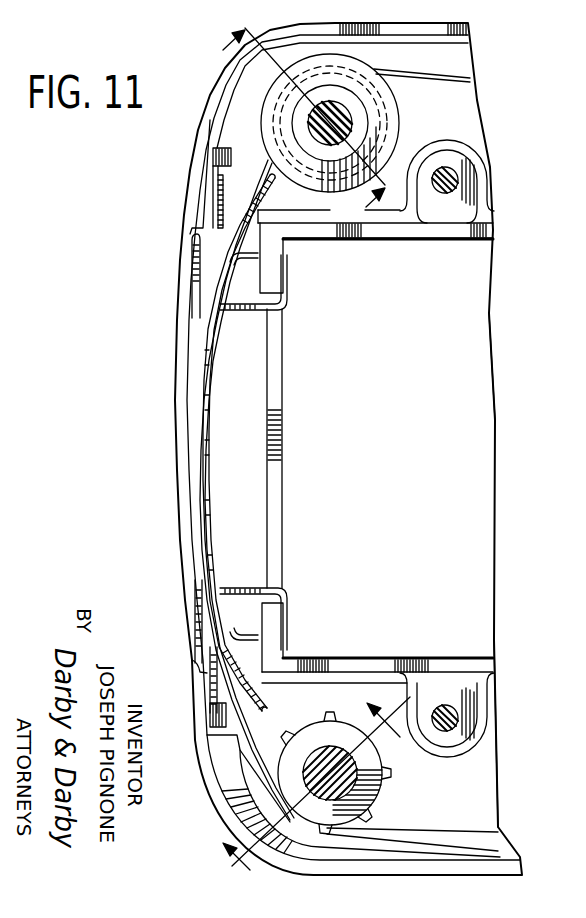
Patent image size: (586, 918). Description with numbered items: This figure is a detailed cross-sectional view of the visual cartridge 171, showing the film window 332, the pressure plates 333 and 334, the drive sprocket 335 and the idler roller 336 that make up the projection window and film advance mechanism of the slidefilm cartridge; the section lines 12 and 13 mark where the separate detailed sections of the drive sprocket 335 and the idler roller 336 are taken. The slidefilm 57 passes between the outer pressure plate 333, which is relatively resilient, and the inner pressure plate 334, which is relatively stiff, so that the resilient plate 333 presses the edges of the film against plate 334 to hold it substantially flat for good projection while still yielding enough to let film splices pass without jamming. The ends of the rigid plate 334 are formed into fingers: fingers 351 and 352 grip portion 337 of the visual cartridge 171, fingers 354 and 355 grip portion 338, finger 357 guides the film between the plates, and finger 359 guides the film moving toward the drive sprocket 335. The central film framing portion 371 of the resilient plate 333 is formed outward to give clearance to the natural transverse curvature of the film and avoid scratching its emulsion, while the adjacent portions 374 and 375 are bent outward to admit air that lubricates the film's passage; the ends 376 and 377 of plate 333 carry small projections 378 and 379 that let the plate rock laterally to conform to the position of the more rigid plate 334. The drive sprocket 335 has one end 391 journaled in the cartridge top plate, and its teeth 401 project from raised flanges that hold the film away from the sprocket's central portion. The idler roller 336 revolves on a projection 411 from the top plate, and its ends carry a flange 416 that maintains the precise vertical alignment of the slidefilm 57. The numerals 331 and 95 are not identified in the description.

The section line 13- 13 is at (284, 124).
The section line 12- 12 is at (317, 791).
The flange 416 is at (380, 73).
The slidefilm 57 is at (455, 73).
The idler roller 336 is at (399, 112).
The projection 411 is at (353, 124).
The small projection 379 is at (212, 183).
The end of pressure plate 377 is at (218, 202).
The finger 357 is at (262, 196).
The finger 354 is at (263, 240).
The finger 355 is at (288, 278).
The portion of visual cartridge 338 is at (270, 287).
The outwardly bent portion 375 is at (193, 287).
The frame 331 is at (411, 472).
The central film framing portion 371 is at (190, 398).
The film window 332 is at (176, 420).
The outer pressure plate 333 is at (186, 484).
The inner pressure plate 334 is at (209, 504).
The visual cartridge 171 is at (493, 572).
The portion of visual cartridge 337 is at (273, 598).
The finger 352 is at (290, 622).
The outwardly bent portion 374 is at (200, 620).
The finger 351 is at (263, 657).
The end of pressure plate 376 is at (220, 678).
The finger 359 is at (265, 703).
The sprocket teeth 401 is at (323, 712).
The small projection 378 is at (210, 712).
The end of drive sprocket 391 is at (391, 773).
The drive sprocket 335 is at (384, 800).
The housing side 95 is at (506, 740).